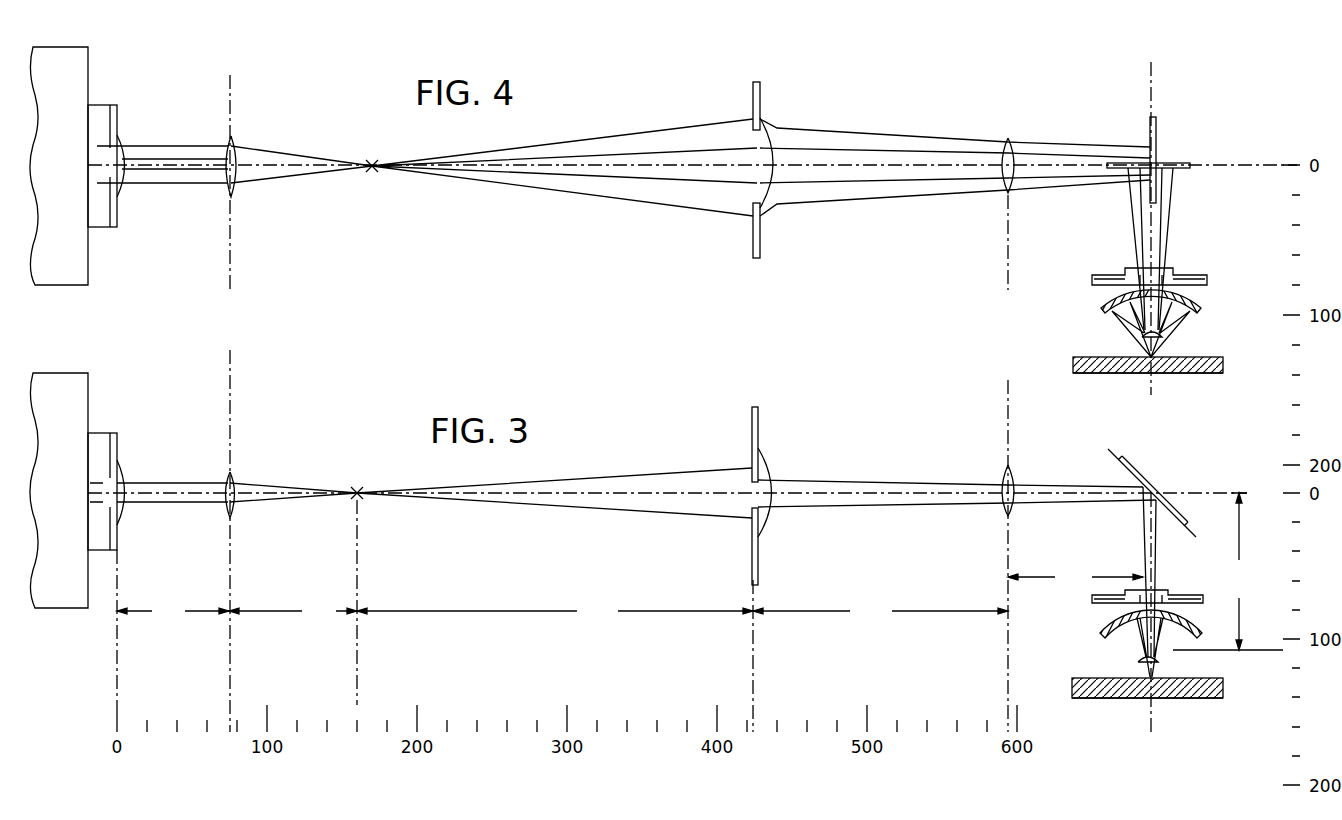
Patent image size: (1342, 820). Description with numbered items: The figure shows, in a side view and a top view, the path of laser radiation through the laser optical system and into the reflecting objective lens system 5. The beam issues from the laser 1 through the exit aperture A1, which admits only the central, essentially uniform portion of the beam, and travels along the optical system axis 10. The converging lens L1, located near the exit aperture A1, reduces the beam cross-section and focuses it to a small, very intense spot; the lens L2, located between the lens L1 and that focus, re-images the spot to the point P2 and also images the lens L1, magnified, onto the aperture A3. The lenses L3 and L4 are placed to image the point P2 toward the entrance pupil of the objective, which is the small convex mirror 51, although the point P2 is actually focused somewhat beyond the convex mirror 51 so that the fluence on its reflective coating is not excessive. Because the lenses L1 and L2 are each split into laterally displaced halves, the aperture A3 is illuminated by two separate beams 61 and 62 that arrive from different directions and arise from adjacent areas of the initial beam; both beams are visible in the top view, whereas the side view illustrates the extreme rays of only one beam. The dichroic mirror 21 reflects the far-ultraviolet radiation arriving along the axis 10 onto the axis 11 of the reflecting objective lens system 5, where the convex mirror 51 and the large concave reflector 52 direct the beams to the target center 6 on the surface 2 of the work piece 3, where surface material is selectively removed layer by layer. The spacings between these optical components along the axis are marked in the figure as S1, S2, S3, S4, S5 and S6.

In FIG. 4, the laser 1 is at (89, 56).
In FIG. 3, the laser 1 is at (89, 382).
In FIG. 4, the exit aperture A1 is at (121, 113).
In FIG. 3, the exit aperture A1 is at (121, 450).
In FIG. 4, the converging lens L1 is at (126, 143).
In FIG. 3, the converging lens L1 is at (129, 479).
In FIG. 4, the optical system axis 10 is at (187, 170).
In FIG. 3, the optical system axis 10 is at (183, 497).
In FIG. 4, the lens L2 is at (236, 141).
In FIG. 3, the lens L2 is at (236, 479).
In FIG. 4, the point P2 is at (374, 162).
In FIG. 3, the point P2 is at (360, 490).
In FIG. 4, the aperture A3 is at (762, 109).
In FIG. 3, the aperture A3 is at (759, 426).
In FIG. 4, the lens L3 is at (779, 138).
In FIG. 3, the lens L3 is at (772, 463).
In FIG. 4, the lens L4 is at (1013, 139).
In FIG. 3, the lens L4 is at (1014, 479).
In FIG. 4, the laser beam 61 is at (916, 196).
In FIG. 3, the laser beam 61 is at (920, 506).
In FIG. 4, the laser beam 62 is at (924, 137).
In FIG. 4, the dichroic mirror 21 is at (1175, 162).
In FIG. 3, the dichroic mirror 21 is at (1137, 466).
In FIG. 4, the optical axis 11 is at (1170, 212).
In FIG. 4, the reflecting objective lens system 5 is at (1084, 311).
In FIG. 3, the reflecting objective lens system 5 is at (1089, 648).
In FIG. 4, the large concave reflector 52 is at (1198, 311).
In FIG. 3, the large concave reflector 52 is at (1125, 628).
In FIG. 4, the convex reflector 51 is at (1164, 334).
In FIG. 3, the convex reflector 51 is at (1156, 660).
In FIG. 4, the target center 6 is at (1147, 355).
In FIG. 3, the target center 6 is at (1170, 667).
In FIG. 4, the surface 2 is at (1193, 358).
In FIG. 3, the surface 2 is at (1086, 678).
In FIG. 4, the work piece 3 is at (1074, 372).
In FIG. 3, the work piece 3 is at (1072, 690).
In FIG. 3, the distance S1 is at (173, 614).
In FIG. 3, the distance S2 is at (293, 614).
In FIG. 3, the distance S3 is at (555, 614).
In FIG. 3, the distance S4 is at (880, 614).
In FIG. 3, the distance S5 is at (1075, 582).
In FIG. 3, the distance S6 is at (1228, 571).